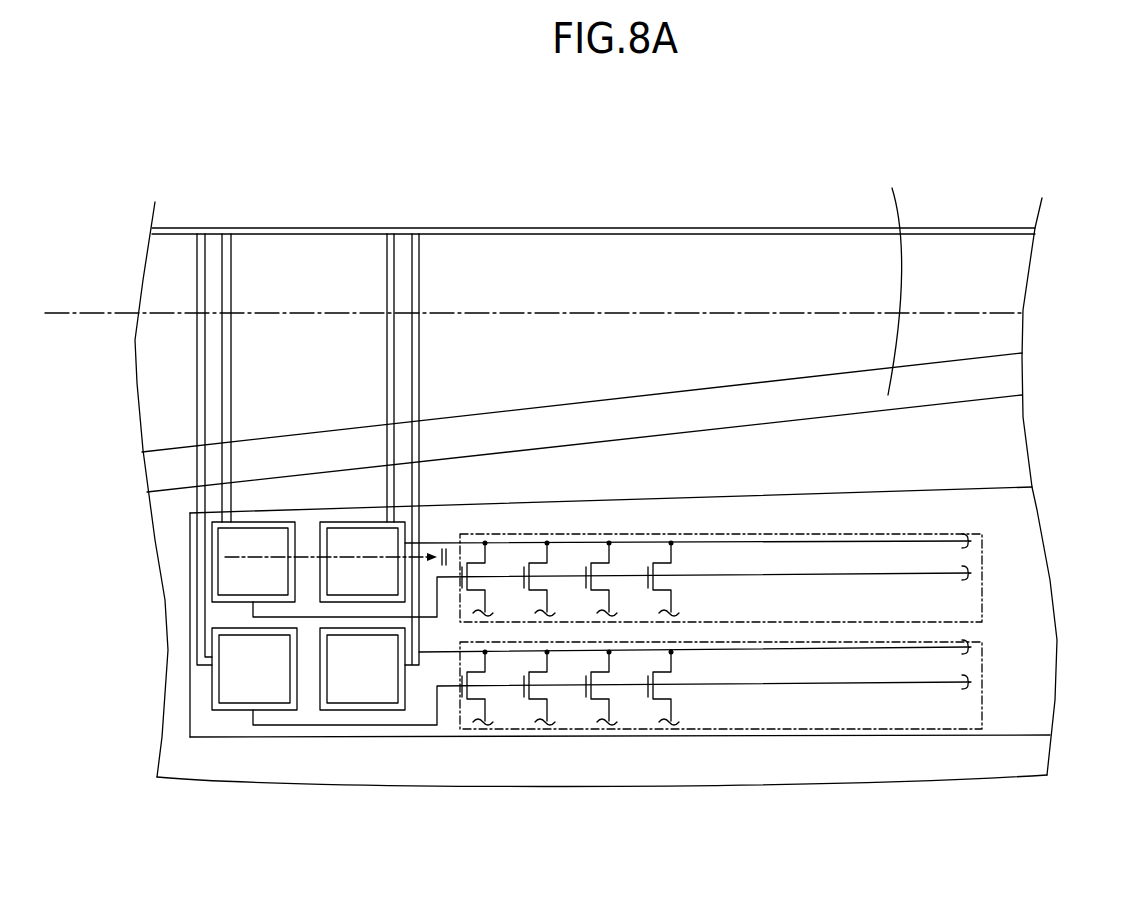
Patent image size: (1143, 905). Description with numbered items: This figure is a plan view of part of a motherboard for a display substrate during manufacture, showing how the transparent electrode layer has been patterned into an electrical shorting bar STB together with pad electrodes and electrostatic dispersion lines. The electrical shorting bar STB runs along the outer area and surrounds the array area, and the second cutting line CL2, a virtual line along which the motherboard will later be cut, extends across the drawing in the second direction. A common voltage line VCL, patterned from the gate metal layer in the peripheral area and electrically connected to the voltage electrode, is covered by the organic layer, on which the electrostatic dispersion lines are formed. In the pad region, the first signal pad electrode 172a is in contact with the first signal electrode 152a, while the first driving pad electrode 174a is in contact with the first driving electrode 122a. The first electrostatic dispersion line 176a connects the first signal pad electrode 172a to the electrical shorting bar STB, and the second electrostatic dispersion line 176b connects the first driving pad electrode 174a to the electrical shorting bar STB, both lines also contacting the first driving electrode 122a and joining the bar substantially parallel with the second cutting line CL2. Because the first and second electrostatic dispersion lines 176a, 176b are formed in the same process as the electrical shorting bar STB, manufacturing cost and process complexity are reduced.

The second electrostatic dispersion line 176b is at (197, 250).
The first electrostatic dispersion line 176a is at (420, 250).
The electrical shorting bar STB is at (578, 228).
The common voltage line VCL is at (892, 278).
The second cutting line CL2 is at (1034, 313).
The first driving electrode 122a is at (248, 692).
The first driving pad electrode 174a is at (285, 708).
The first signal pad electrode 172a is at (332, 708).
The first signal electrode 152a is at (368, 692).